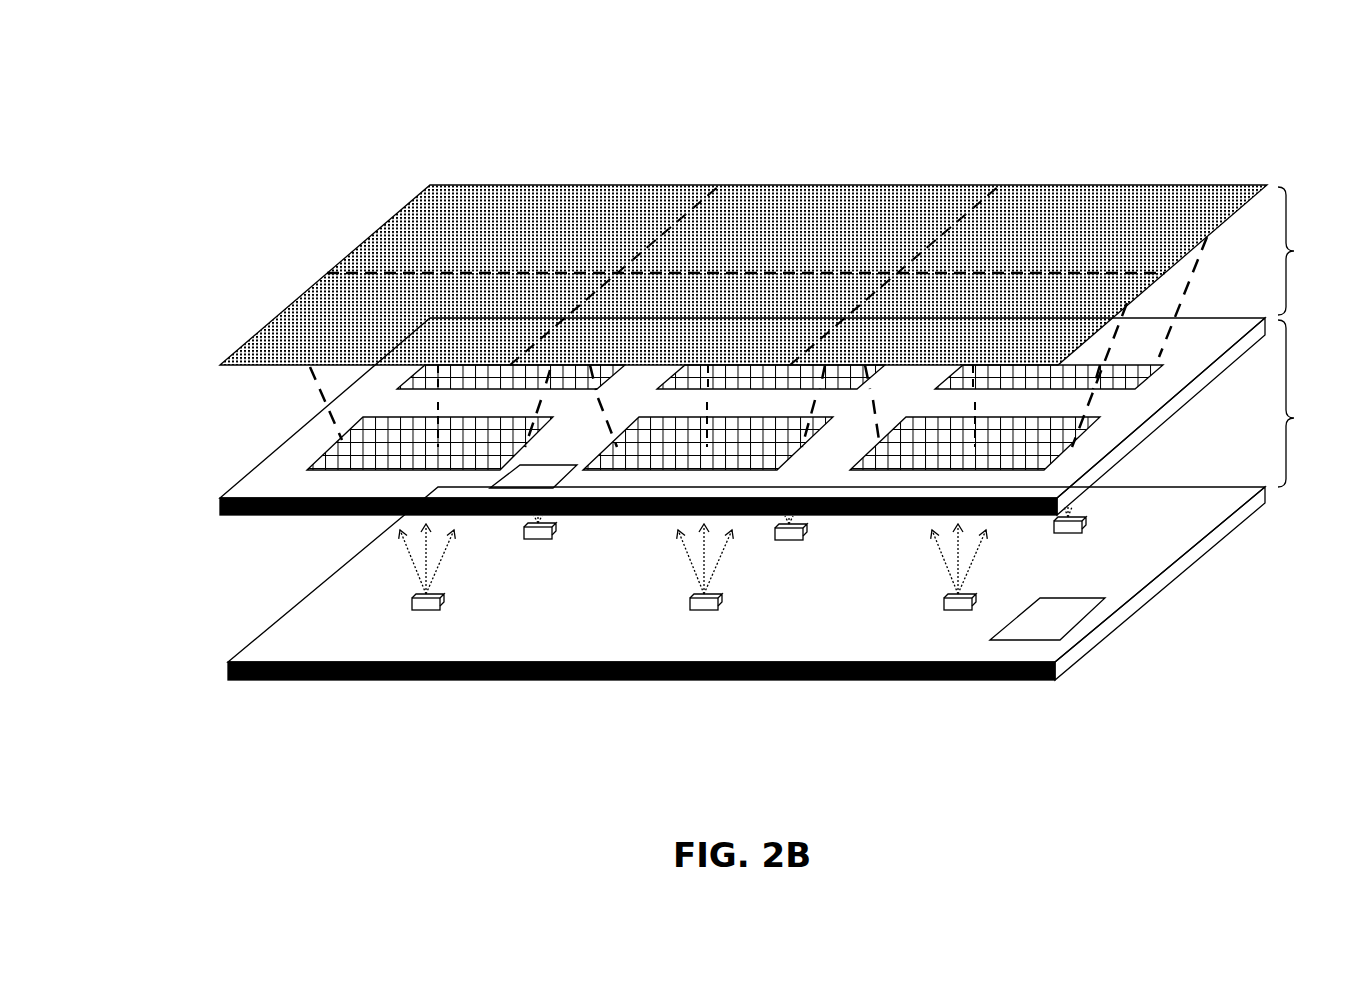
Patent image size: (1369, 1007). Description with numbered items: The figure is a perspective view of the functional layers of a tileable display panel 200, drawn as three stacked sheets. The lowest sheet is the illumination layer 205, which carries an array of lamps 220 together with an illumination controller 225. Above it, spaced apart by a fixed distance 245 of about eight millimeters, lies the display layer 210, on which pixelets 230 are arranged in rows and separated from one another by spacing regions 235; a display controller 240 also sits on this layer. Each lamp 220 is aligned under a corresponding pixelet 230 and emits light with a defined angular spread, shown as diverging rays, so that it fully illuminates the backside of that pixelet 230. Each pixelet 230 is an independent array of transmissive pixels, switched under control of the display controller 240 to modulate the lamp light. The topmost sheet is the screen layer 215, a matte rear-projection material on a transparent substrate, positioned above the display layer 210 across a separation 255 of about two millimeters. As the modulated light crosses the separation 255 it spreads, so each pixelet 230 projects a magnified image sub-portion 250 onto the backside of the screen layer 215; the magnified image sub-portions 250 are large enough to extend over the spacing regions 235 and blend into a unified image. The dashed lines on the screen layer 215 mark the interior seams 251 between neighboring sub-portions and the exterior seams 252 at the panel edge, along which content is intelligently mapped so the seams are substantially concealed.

The tileable display panel 200 is at (325, 135).
The illumination layer 205 is at (282, 622).
The display layer 210 is at (268, 460).
The screen layer 215 is at (332, 276).
The lamp 220 is at (424, 610).
The illumination controller 225 is at (1029, 632).
The pixelet 230 is at (368, 449).
The spacing region 235 is at (261, 489).
The display controller 240 is at (513, 489).
The fixed distance 245 is at (1309, 403).
The magnified image sub-portion 250 is at (481, 237).
The interior seam 251 is at (655, 232).
The exterior seam 252 is at (905, 185).
The separation 255 is at (1309, 251).